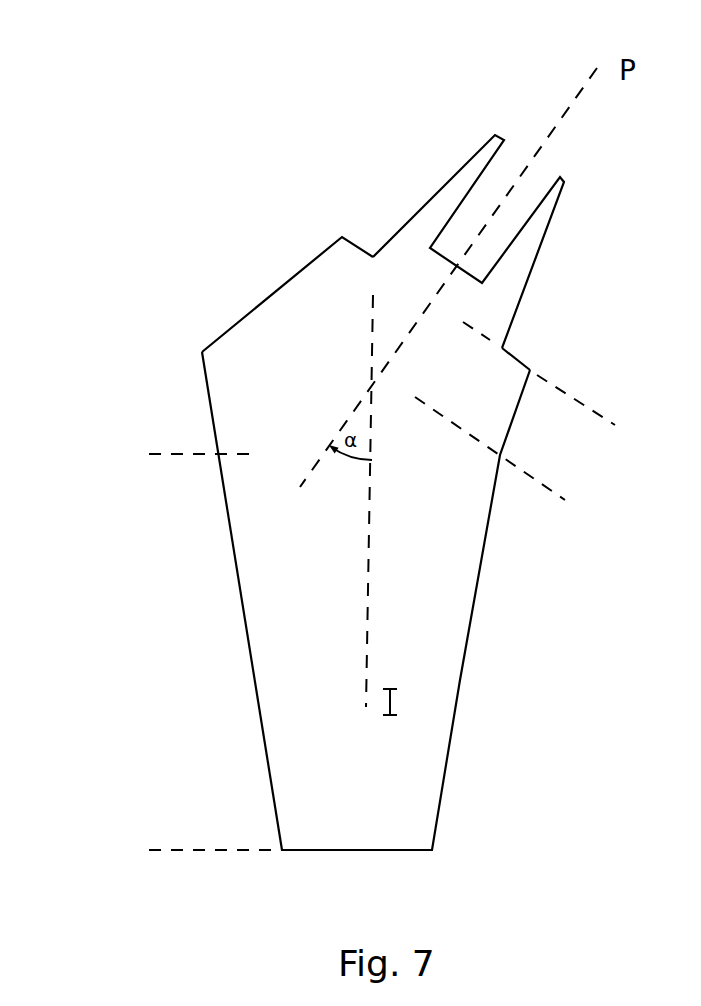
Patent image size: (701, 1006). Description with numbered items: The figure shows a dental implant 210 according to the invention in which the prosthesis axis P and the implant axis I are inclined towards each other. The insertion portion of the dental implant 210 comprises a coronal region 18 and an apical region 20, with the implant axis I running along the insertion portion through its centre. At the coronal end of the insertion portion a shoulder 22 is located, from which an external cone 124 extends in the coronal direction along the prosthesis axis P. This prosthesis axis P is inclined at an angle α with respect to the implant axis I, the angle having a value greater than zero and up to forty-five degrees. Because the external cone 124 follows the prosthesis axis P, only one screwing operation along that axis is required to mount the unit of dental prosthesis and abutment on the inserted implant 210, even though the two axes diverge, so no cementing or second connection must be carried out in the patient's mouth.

The dental implant 210 is at (151, 123).
The external cone 124 is at (407, 257).
The shoulder 22 is at (513, 355).
The coronal region 18 is at (620, 435).
The apical region 20 is at (146, 839).